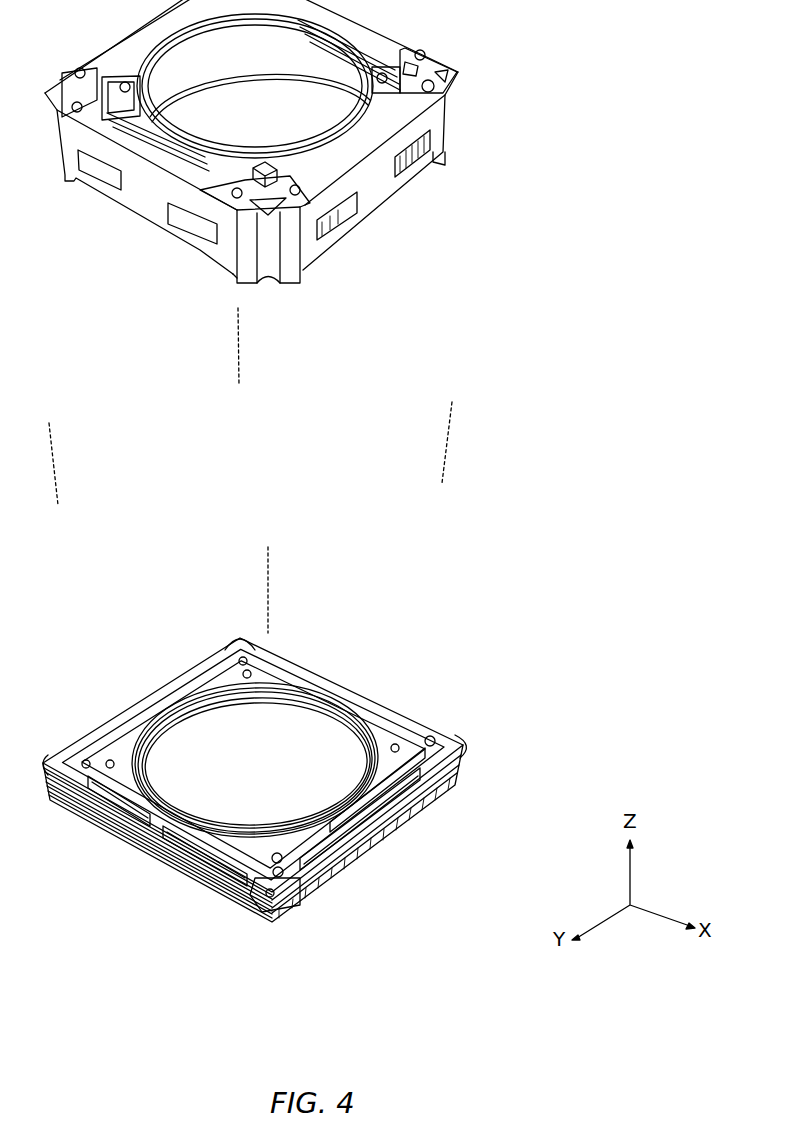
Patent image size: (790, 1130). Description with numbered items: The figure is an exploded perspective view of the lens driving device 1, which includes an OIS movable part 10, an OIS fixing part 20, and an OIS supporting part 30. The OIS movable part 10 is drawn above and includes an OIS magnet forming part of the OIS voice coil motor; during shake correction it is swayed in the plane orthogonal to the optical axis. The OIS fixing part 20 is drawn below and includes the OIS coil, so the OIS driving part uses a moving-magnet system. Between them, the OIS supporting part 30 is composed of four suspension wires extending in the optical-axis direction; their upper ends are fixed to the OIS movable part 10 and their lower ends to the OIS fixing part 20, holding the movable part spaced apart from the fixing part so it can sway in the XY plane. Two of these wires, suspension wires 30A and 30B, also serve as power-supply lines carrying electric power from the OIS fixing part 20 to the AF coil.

The lens driving device 1 is at (548, 782).
The OIS movable part 10 is at (437, 140).
The OIS fixing part 20 is at (448, 762).
The OIS supporting part 30 is at (460, 415).
The suspension wire 30A is at (52, 438).
The suspension wire 30B is at (448, 440).